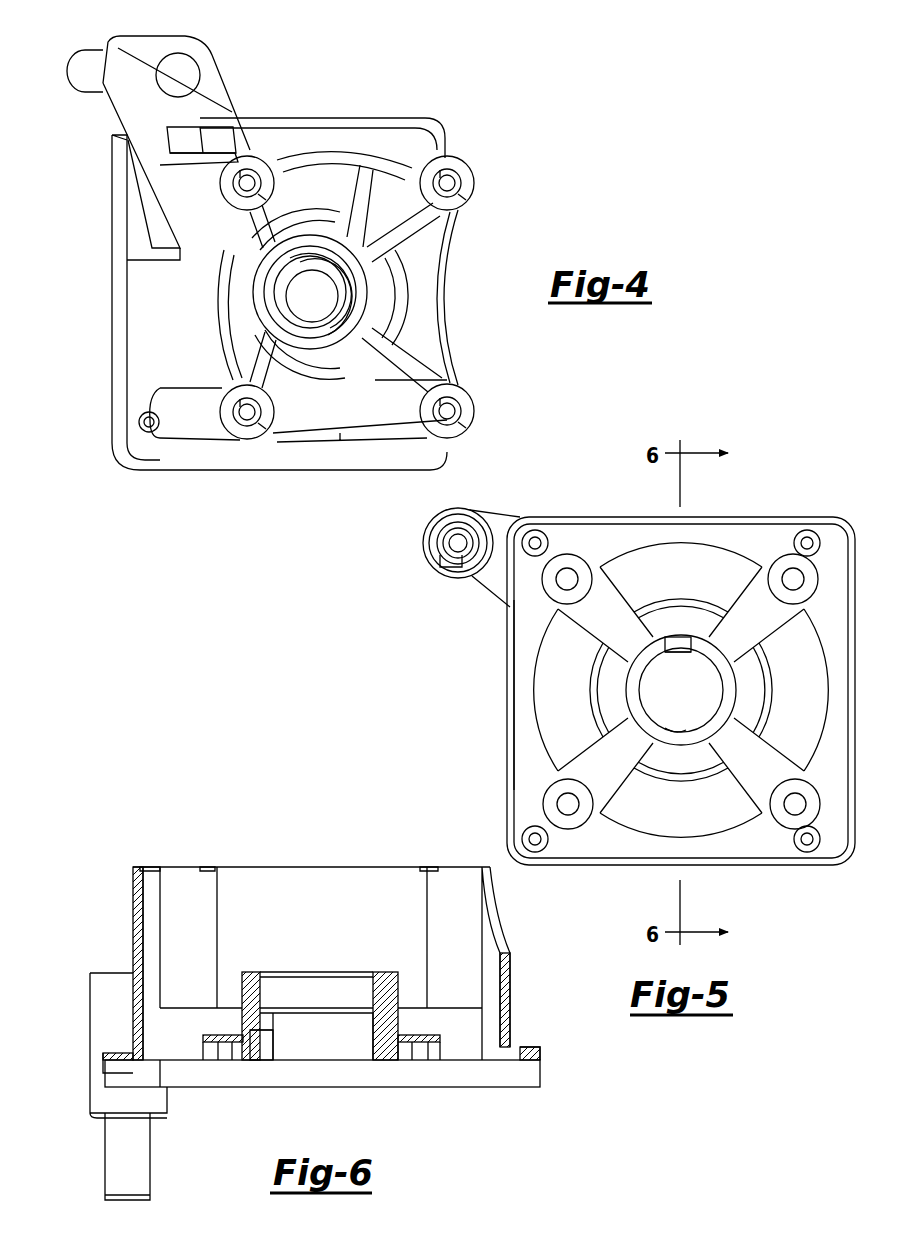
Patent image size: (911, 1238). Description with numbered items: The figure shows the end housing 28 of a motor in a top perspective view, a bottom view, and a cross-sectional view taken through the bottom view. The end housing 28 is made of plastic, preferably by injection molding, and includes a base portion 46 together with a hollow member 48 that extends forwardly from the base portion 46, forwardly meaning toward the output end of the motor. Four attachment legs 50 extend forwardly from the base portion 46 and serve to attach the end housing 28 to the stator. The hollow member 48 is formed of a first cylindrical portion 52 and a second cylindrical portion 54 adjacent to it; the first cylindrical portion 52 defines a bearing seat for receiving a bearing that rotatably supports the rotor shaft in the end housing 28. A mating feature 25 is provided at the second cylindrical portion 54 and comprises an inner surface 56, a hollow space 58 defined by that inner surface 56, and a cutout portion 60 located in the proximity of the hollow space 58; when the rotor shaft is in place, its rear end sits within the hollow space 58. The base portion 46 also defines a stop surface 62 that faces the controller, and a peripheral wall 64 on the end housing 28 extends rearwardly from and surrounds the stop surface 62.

In FIG. 5, the mating feature 25 is at (676, 656).
In FIG. 6, the mating feature 25 is at (268, 1042).
In FIG. 4, the end housing 28 is at (326, 104).
In FIG. 5, the end housing 28 is at (800, 495).
In FIG. 6, the end housing 28 is at (135, 855).
In FIG. 4, the base portion 46 is at (108, 266).
In FIG. 5, the base portion 46 is at (633, 514).
In FIG. 6, the base portion 46 is at (104, 1066).
In FIG. 4, the hollow member 48 is at (374, 296).
In FIG. 5, the hollow member 48 is at (750, 688).
In FIG. 6, the hollow member 48 is at (250, 966).
In FIG. 4, the attachment legs 50 is at (258, 160).
In FIG. 4, the first cylindrical portion 52 is at (297, 233).
In FIG. 6, the first cylindrical portion 52 is at (402, 975).
In FIG. 4, the second cylindrical portion 54 is at (308, 294).
In FIG. 6, the second cylindrical portion 54 is at (404, 1022).
In FIG. 4, the inner surface 56 is at (336, 280).
In FIG. 5, the inner surface 56 is at (668, 735).
In FIG. 6, the inner surface 56 is at (372, 1040).
In FIG. 4, the hollow space 58 is at (290, 318).
In FIG. 5, the hollow space 58 is at (700, 702).
In FIG. 6, the hollow space 58 is at (345, 1047).
In FIG. 5, the cutout portion 60 is at (676, 640).
In FIG. 6, the cutout portion 60 is at (254, 1062).
In FIG. 5, the stop surface 62 is at (760, 538).
In FIG. 6, the stop surface 62 is at (190, 1062).
In FIG. 4, the peripheral wall 64 is at (120, 180).
In FIG. 5, the peripheral wall 64 is at (508, 648).
In FIG. 6, the peripheral wall 64 is at (96, 1080).